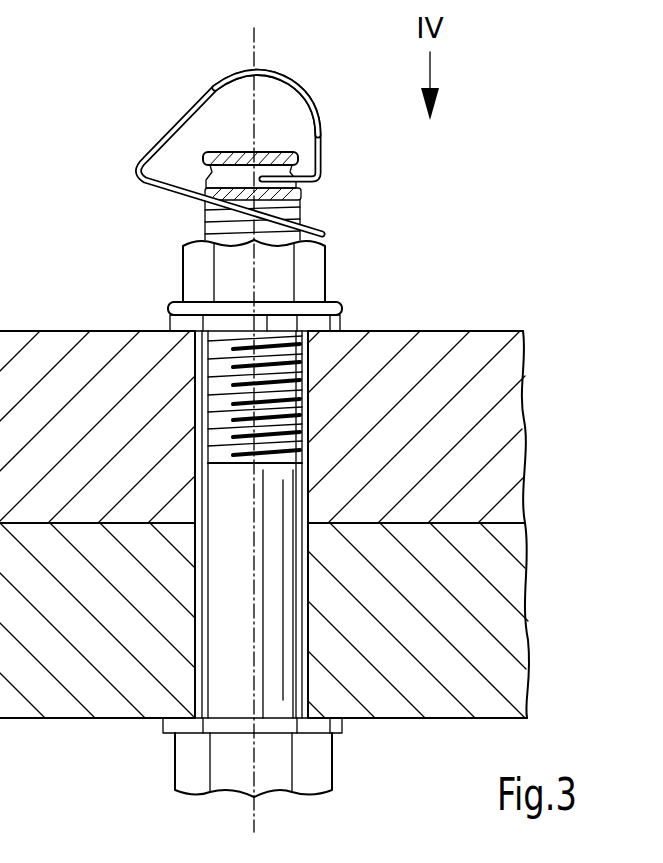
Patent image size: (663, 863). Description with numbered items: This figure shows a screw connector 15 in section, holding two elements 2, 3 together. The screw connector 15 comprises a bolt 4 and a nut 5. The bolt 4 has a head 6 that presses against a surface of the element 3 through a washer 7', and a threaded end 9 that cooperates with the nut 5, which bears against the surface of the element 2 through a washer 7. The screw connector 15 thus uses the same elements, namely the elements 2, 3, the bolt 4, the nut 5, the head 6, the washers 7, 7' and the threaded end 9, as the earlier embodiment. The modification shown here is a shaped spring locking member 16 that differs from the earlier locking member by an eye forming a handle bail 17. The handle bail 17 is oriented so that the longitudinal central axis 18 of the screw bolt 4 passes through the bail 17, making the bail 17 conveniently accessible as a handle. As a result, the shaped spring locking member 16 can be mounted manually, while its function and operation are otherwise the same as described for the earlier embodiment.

The element 2 is at (518, 472).
The element 3 is at (518, 607).
The bolt 4 is at (214, 645).
The nut 5 is at (195, 275).
The head 6 is at (332, 756).
The washer 7 is at (282, 487).
The washer 7' is at (223, 750).
The threaded end 9 is at (305, 393).
The screw connector 15 is at (484, 198).
The shaped spring locking member 16 is at (136, 115).
The handle bail 17 is at (306, 95).
The longitudinal central axis 18 is at (254, 33).